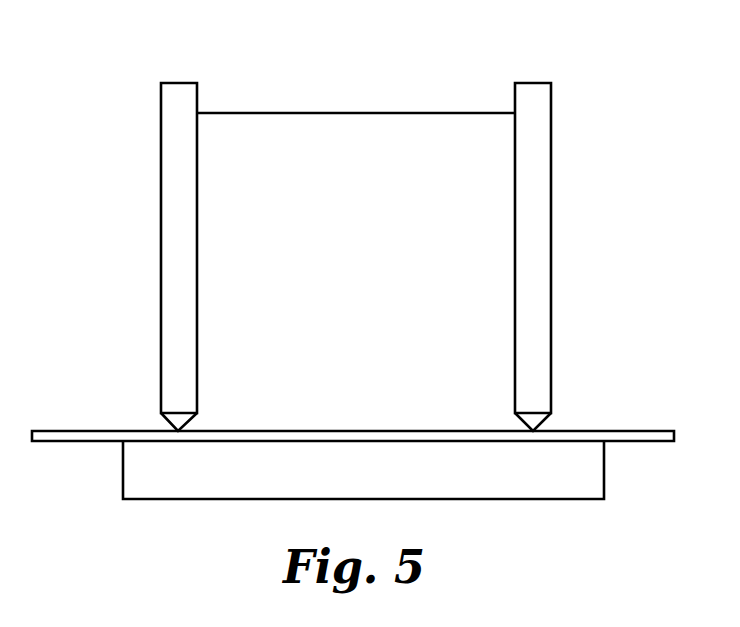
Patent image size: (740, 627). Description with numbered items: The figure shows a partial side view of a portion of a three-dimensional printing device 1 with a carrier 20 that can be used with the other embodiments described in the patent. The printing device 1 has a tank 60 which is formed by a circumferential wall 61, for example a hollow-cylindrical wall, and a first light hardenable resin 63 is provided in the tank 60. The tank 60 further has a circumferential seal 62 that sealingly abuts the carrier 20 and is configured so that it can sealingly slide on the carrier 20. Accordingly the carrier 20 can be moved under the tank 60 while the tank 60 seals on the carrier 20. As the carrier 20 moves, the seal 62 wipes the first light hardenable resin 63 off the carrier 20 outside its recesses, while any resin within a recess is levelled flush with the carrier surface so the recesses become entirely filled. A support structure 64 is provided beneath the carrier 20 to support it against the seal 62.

The 3D printing device 1 is at (622, 102).
The carrier 20 is at (655, 430).
The tank 60 is at (363, 222).
The circumferential wall 61 is at (533, 231).
The circumferential seal 62 is at (172, 422).
The first light hardenable resin 63 is at (351, 130).
The support structure 64 is at (592, 469).